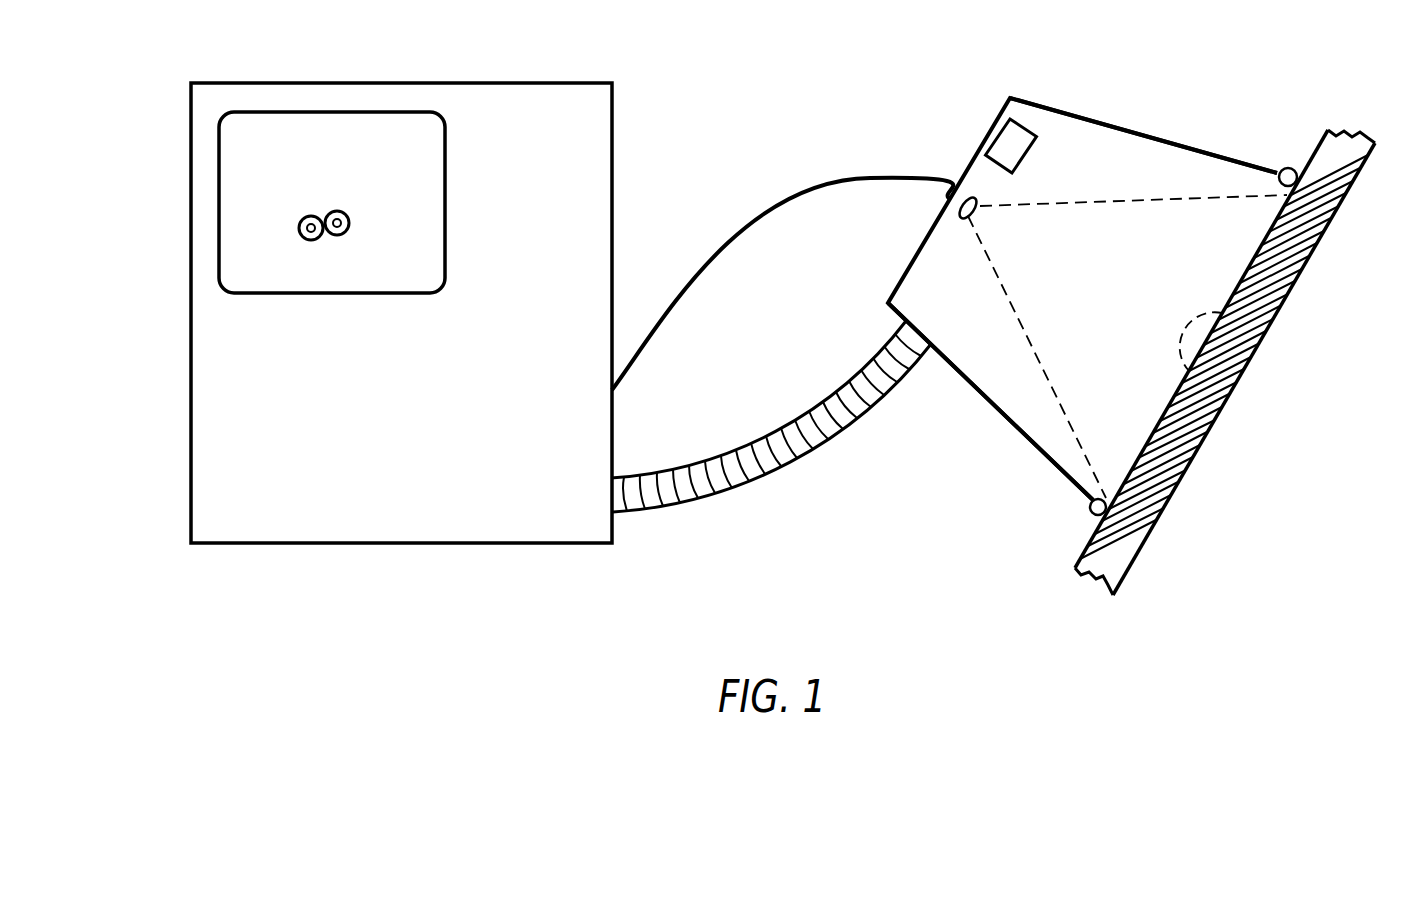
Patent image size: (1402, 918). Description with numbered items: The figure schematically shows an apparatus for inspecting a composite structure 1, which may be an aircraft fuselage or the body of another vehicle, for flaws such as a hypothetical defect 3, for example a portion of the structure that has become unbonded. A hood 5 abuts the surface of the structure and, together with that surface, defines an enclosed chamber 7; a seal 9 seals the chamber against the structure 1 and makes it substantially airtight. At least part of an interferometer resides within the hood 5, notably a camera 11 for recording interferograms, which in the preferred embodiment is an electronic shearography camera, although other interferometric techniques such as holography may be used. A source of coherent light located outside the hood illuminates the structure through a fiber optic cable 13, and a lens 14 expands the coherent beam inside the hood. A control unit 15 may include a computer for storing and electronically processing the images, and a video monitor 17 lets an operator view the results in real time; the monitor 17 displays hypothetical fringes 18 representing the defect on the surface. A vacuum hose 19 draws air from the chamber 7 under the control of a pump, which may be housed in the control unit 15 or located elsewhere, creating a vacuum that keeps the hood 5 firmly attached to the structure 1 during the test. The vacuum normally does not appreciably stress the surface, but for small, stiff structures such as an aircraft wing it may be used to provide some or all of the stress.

The composite structure 1 is at (1133, 535).
The hypothetical defect 3 is at (1203, 360).
The hood 5 is at (1153, 133).
The enclosed chamber 7 is at (1062, 367).
The seal 9 is at (1288, 168).
The camera 11 is at (1018, 127).
The fiber optic cable 13 is at (835, 180).
The lens 14 is at (962, 203).
The control unit 15 is at (468, 517).
The video monitor 17 is at (353, 130).
The hypothetical fringes 18 is at (328, 210).
The vacuum hose 19 is at (783, 457).